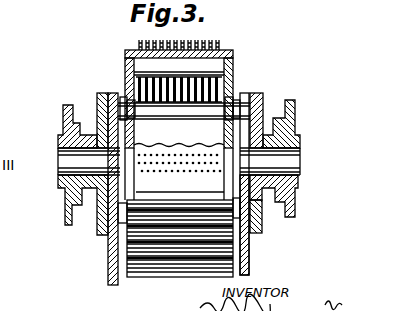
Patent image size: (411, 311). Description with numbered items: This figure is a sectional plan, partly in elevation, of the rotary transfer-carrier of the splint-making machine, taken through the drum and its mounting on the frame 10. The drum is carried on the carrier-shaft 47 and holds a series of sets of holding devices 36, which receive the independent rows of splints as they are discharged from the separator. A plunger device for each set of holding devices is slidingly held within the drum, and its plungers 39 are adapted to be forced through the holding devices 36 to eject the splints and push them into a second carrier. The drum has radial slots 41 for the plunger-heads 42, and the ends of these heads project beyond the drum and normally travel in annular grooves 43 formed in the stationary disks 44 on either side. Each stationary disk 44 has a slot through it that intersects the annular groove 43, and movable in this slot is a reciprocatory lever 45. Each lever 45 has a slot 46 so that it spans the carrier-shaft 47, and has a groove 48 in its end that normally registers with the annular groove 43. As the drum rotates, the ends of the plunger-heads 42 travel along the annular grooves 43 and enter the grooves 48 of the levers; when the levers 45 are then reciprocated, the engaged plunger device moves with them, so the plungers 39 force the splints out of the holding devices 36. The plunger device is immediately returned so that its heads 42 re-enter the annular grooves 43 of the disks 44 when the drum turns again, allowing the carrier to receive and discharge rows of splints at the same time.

The frame 10 is at (296, 120).
The holding devices 36 is at (224, 185).
The plungers 39 is at (179, 67).
The radial slots 41 is at (127, 80).
The plunger-heads 42 is at (184, 108).
The annular grooves 43 is at (261, 100).
The stationary disks 44 is at (97, 97).
The reciprocatory lever 45 is at (107, 272).
The slot 46 is at (106, 200).
The carrier-shaft 47 is at (60, 170).
The groove 48 is at (97, 107).